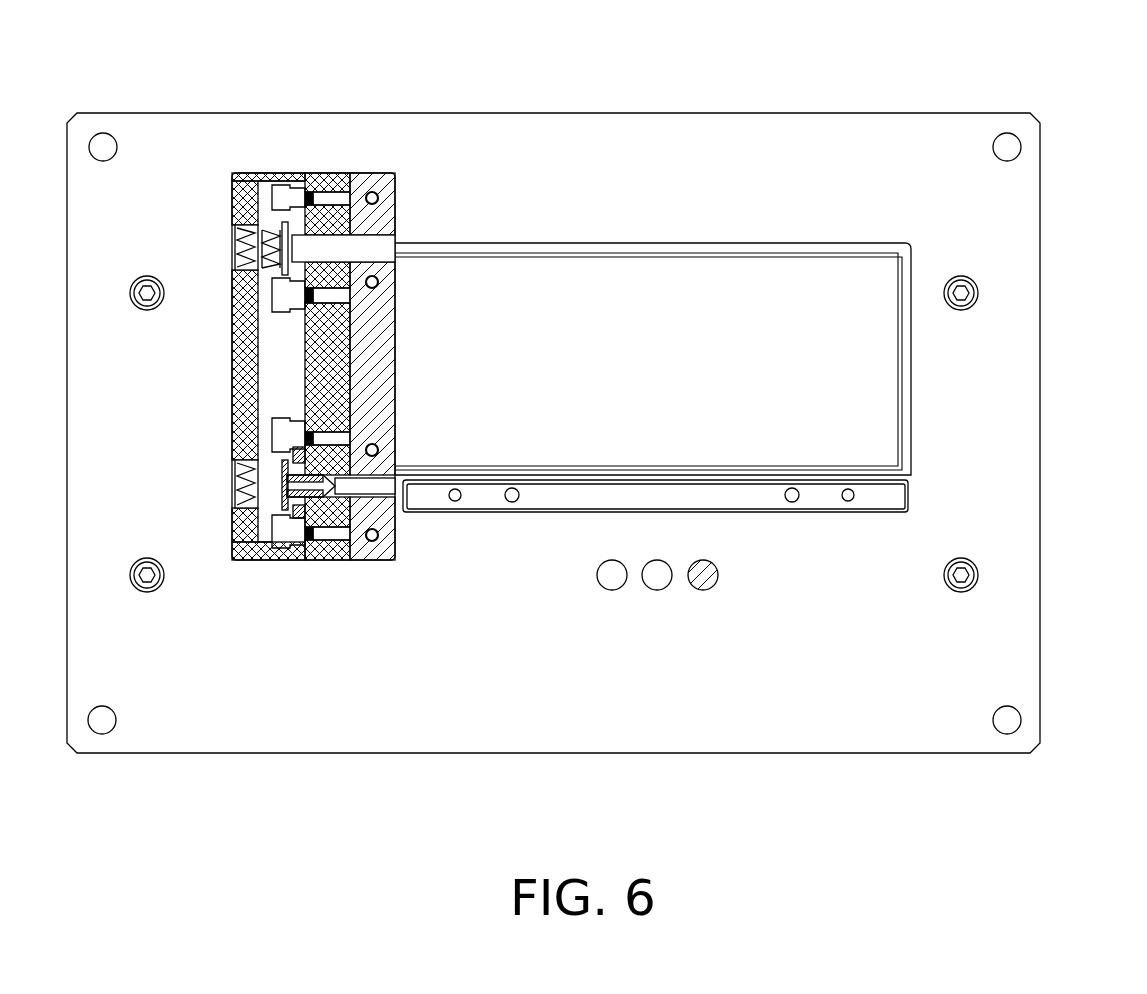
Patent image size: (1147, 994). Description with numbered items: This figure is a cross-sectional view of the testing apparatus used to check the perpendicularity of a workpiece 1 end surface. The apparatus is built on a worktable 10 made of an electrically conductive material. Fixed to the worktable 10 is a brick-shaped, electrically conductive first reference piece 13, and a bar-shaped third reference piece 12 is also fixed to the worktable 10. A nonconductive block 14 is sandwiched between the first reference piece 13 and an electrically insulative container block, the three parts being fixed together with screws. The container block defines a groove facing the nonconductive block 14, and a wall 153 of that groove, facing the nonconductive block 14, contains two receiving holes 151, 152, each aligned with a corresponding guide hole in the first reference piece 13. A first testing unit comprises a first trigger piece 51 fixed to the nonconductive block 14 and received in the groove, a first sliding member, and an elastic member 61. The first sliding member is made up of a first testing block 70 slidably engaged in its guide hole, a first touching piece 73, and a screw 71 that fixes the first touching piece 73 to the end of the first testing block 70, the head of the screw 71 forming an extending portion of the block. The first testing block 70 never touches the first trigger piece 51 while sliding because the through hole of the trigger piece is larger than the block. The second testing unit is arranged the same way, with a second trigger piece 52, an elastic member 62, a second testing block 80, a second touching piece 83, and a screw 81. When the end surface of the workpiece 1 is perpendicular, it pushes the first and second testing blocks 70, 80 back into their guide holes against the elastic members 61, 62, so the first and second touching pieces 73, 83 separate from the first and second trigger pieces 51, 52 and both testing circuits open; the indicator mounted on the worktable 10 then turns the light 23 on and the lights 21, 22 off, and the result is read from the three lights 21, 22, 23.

The card 1 is at (858, 408).
The worktable 10 is at (1000, 233).
The third reference piece 12 is at (890, 497).
The first reference piece 13 is at (352, 390).
The nonconductive block 14 is at (382, 320).
The light 21 is at (612, 578).
The light 22 is at (660, 585).
The light 23 is at (706, 588).
The first trigger piece 51 is at (310, 182).
The second trigger piece 52 is at (300, 550).
The elastic member 61 is at (237, 240).
The elastic member 62 is at (240, 470).
The first testing block 70 is at (375, 245).
The screw 71 is at (268, 222).
The first touching piece 73 is at (290, 215).
The second testing block 80 is at (370, 483).
The screw 81 is at (240, 518).
The second touching piece 83 is at (287, 510).
The receiving hole 151 is at (245, 177).
The receiving hole 152 is at (253, 500).
The wall 153 is at (245, 367).